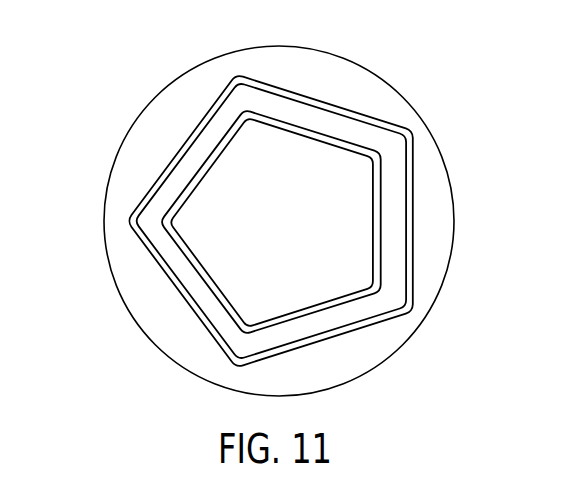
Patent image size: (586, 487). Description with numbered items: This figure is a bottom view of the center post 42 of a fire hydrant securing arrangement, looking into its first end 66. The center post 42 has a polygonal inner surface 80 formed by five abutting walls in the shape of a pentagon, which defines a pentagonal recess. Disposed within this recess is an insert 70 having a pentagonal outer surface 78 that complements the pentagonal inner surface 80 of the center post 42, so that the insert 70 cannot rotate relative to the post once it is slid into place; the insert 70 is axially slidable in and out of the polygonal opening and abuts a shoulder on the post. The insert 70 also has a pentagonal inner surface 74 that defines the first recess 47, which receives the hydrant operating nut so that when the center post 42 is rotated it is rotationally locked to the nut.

The center post 42 is at (435, 140).
The first recess 47 is at (297, 163).
The first end 66 is at (439, 211).
The insert 70 is at (393, 266).
The polygonal inner surface 74 is at (368, 217).
The polygonal outer surface 78 is at (407, 225).
The polygonal inner surface 80 is at (414, 203).